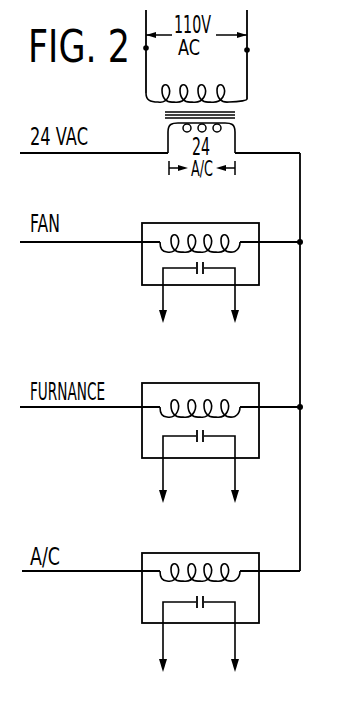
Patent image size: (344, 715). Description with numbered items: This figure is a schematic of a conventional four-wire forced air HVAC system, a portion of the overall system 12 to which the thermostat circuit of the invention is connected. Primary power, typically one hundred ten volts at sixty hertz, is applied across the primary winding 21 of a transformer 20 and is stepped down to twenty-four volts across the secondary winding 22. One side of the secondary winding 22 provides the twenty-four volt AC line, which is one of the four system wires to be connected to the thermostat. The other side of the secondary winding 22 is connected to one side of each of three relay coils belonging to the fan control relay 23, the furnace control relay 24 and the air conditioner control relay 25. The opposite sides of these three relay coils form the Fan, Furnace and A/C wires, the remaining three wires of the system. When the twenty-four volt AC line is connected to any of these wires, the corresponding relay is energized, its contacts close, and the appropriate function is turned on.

The thermostat control system 12 is at (227, 25).
The transformer 20 is at (152, 115).
The primary winding 21 is at (247, 99).
The secondary winding 22 is at (236, 132).
The fan control relay 23 is at (142, 270).
The furnace control relay 24 is at (142, 443).
The air conditioner control relay 25 is at (142, 605).